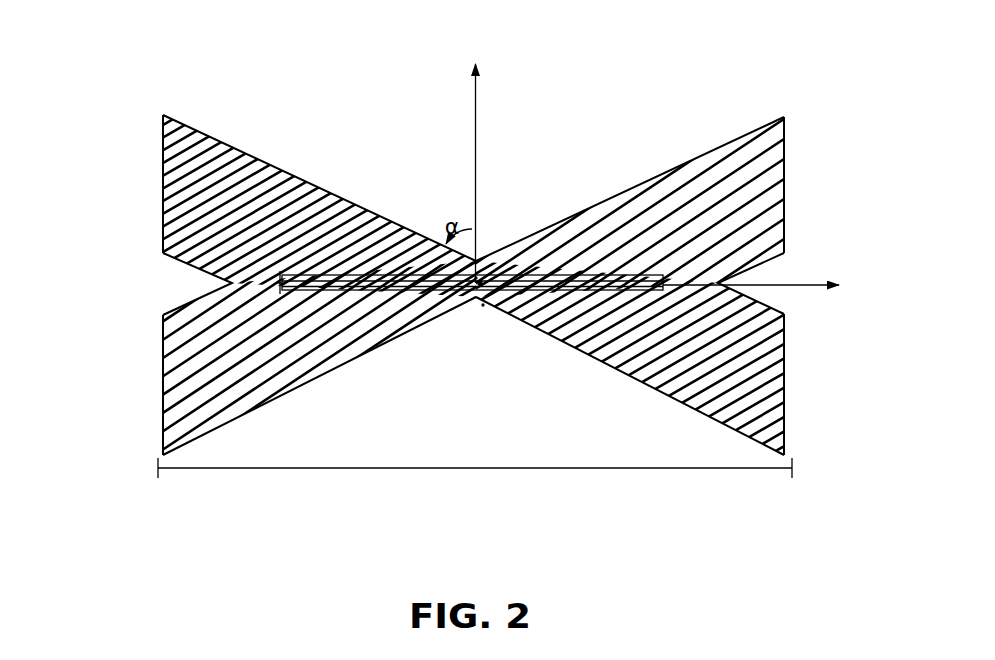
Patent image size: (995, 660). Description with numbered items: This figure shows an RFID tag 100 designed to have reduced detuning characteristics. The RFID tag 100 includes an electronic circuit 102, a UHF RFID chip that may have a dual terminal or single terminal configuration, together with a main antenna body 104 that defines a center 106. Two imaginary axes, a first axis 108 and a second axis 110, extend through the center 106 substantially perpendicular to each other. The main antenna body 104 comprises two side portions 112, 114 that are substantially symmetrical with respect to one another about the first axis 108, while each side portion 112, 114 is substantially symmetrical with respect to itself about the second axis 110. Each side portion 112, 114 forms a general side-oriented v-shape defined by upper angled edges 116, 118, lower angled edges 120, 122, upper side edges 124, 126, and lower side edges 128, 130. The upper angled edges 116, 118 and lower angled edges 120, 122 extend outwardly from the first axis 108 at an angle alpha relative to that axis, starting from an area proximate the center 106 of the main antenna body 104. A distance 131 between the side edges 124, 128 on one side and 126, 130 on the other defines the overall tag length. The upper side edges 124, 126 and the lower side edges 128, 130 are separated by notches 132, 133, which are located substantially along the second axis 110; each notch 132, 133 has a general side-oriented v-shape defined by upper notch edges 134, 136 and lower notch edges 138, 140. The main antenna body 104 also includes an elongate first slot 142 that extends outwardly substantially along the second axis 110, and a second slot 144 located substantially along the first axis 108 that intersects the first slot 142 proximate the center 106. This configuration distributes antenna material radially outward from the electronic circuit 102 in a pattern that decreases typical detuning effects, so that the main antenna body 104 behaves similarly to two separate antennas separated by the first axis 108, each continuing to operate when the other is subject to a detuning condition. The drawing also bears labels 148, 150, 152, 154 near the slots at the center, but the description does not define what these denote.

The RFID tag 100 is at (748, 86).
The electronic circuit 102 is at (478, 282).
The main antenna body 104 is at (133, 127).
The center 106 is at (482, 302).
The first axis 108 is at (477, 103).
The second axis 110 is at (808, 283).
The side portion 112 is at (270, 135).
The side portion 114 is at (681, 146).
The upper angled edge 116 is at (300, 179).
The upper angled edge 118 is at (621, 194).
The lower angled edge 120 is at (335, 368).
The lower angled edge 122 is at (656, 368).
The upper side edge 124 is at (160, 184).
The upper side edge 126 is at (788, 176).
The lower side edge 128 is at (158, 414).
The lower side edge 130 is at (782, 408).
The distance 131 is at (476, 470).
The notch 132 is at (160, 295).
The notch 133 is at (792, 302).
The upper notch edge 134 is at (170, 236).
The upper notch edge 136 is at (775, 240).
The lower notch edge 138 is at (168, 330).
The lower notch edge 140 is at (775, 330).
The first slot 142 is at (330, 300).
The second slot 144 is at (474, 280).
The left bar surface 148 is at (405, 286).
The right bar surface 150 is at (577, 293).
The central bar 152 is at (375, 274).
The bar end 154 is at (280, 291).